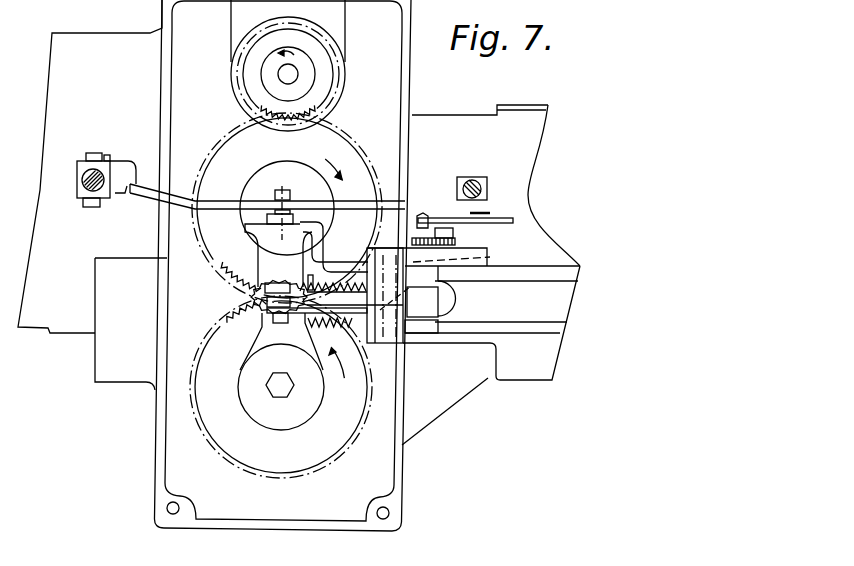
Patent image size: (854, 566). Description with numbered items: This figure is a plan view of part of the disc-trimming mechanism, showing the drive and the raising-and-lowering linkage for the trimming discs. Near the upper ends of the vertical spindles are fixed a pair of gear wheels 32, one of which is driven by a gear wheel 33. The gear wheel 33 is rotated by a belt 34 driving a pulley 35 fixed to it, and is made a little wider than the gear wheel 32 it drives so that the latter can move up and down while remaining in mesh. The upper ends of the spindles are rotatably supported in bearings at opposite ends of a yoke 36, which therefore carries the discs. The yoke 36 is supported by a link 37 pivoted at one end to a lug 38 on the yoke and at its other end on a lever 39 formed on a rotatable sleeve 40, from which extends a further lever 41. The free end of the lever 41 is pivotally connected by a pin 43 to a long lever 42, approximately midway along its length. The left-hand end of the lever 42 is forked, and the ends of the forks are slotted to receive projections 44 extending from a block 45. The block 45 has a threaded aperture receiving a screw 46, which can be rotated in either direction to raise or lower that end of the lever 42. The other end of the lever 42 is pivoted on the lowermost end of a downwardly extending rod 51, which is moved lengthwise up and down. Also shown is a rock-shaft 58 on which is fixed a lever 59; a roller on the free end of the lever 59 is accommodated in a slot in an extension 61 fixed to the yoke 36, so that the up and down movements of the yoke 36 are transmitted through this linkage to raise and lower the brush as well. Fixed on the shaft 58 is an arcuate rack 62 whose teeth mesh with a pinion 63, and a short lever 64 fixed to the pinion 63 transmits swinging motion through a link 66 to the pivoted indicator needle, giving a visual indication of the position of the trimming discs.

The gear wheels 32 is at (240, 281).
The gear wheel 33 is at (305, 102).
The belt 34 is at (348, 46).
The pulley 35 is at (229, 78).
The yoke 36 is at (262, 337).
The link 37 is at (268, 302).
The lug 38 is at (278, 285).
The lever 39 is at (323, 316).
The rotatable sleeve 40 is at (372, 280).
The lever 41 is at (330, 238).
The long lever 42 is at (385, 189).
The pin 43 is at (265, 218).
The projections 44 is at (104, 156).
The block 45 is at (75, 179).
The screw 46 is at (79, 156).
The rod 51 is at (470, 177).
The rock-shaft 58 is at (488, 258).
The lever 59 is at (405, 303).
The extension 61 is at (358, 332).
The arcuate rack 62 is at (456, 242).
The pinion 63 is at (385, 279).
The short lever 64 is at (423, 222).
The link 66 is at (513, 221).